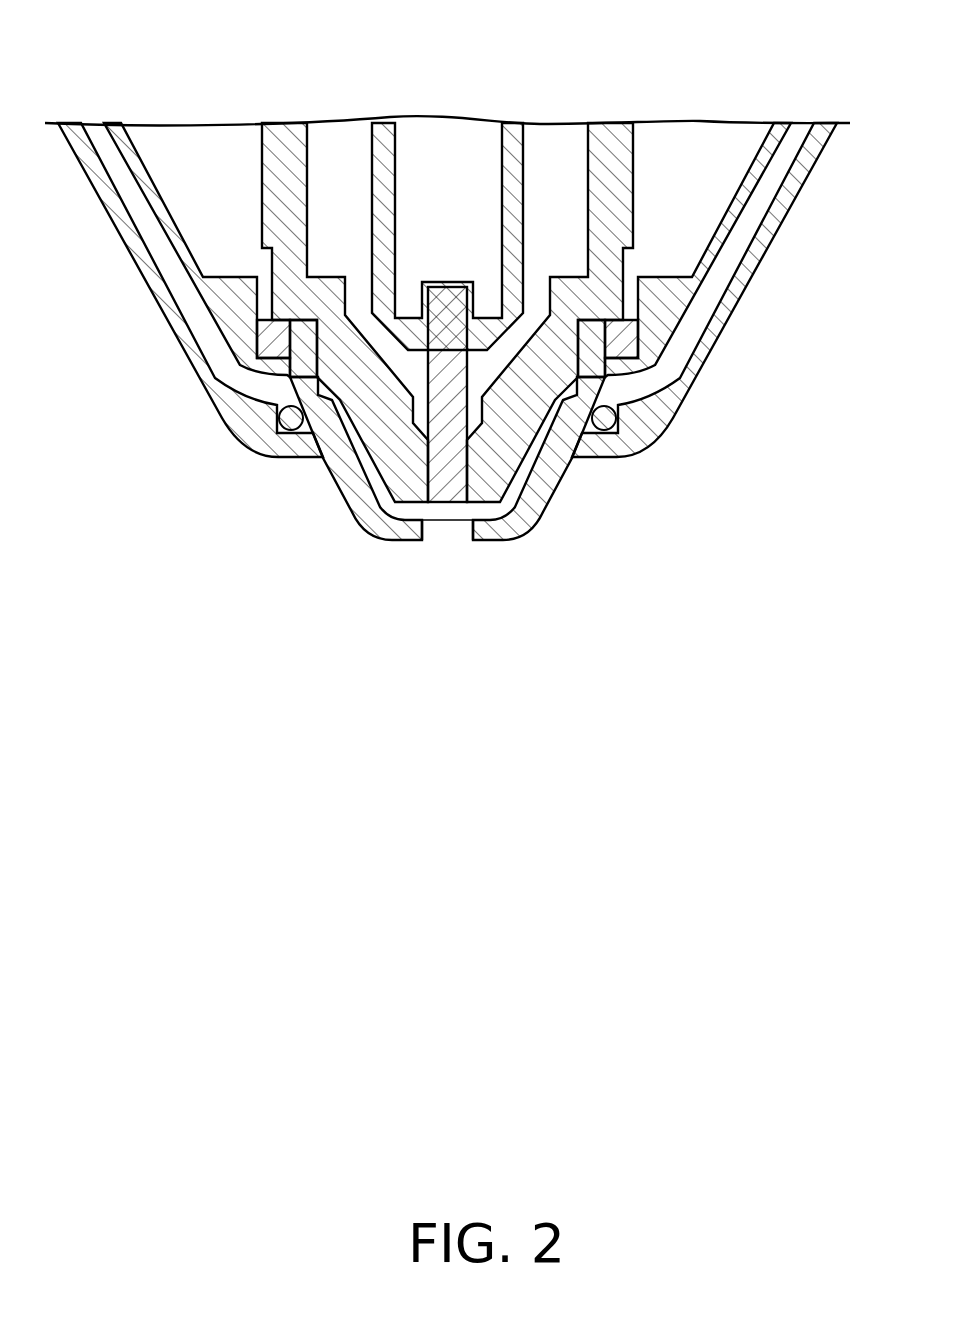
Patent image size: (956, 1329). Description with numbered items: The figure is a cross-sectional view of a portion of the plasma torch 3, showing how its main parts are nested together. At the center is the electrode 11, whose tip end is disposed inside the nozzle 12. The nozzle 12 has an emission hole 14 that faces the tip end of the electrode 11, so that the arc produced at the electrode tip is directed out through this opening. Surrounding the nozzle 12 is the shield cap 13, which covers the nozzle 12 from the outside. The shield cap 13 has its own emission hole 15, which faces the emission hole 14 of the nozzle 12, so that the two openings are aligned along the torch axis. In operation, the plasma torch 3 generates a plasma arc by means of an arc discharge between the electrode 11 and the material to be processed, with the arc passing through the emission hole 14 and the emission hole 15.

The plasma torch 3 is at (692, 476).
The electrode 11 is at (525, 198).
The nozzle 12 is at (395, 457).
The shield cap 13 is at (555, 495).
The emission hole 14 is at (453, 492).
The emission hole 15 is at (430, 532).